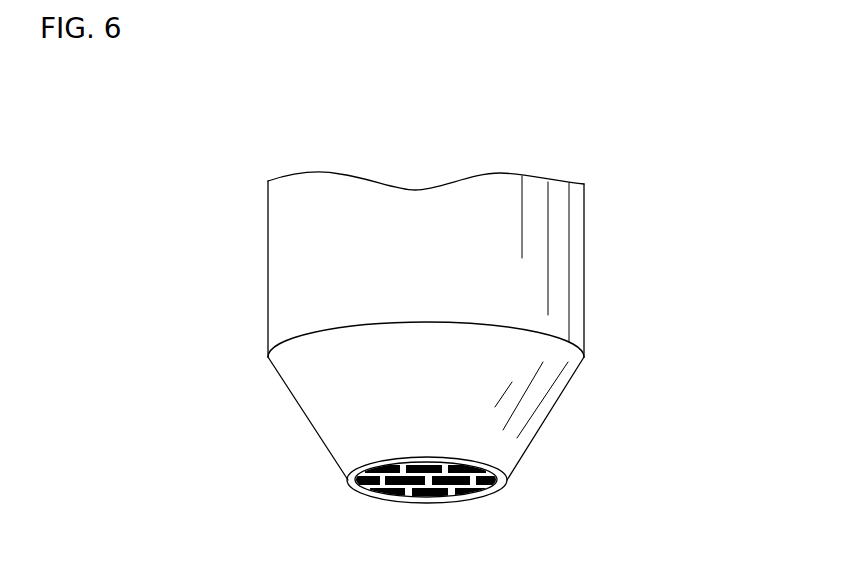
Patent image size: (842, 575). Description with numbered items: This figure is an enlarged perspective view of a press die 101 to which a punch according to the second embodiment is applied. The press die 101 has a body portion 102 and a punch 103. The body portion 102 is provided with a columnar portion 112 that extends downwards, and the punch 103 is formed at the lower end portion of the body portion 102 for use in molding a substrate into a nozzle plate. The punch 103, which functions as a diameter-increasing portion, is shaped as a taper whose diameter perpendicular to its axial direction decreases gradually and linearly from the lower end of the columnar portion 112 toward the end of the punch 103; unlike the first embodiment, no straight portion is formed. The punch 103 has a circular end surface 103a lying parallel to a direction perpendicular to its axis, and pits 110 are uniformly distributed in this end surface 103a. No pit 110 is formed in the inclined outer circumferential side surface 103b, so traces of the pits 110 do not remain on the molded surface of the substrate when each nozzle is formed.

The press die 101 is at (495, 340).
The body portion 102 is at (586, 246).
The columnar portion 112 is at (567, 280).
The punch 103 is at (574, 400).
The end surface 103a is at (495, 495).
The outer circumferential side surface 103b is at (505, 462).
The pits 110 is at (350, 485).